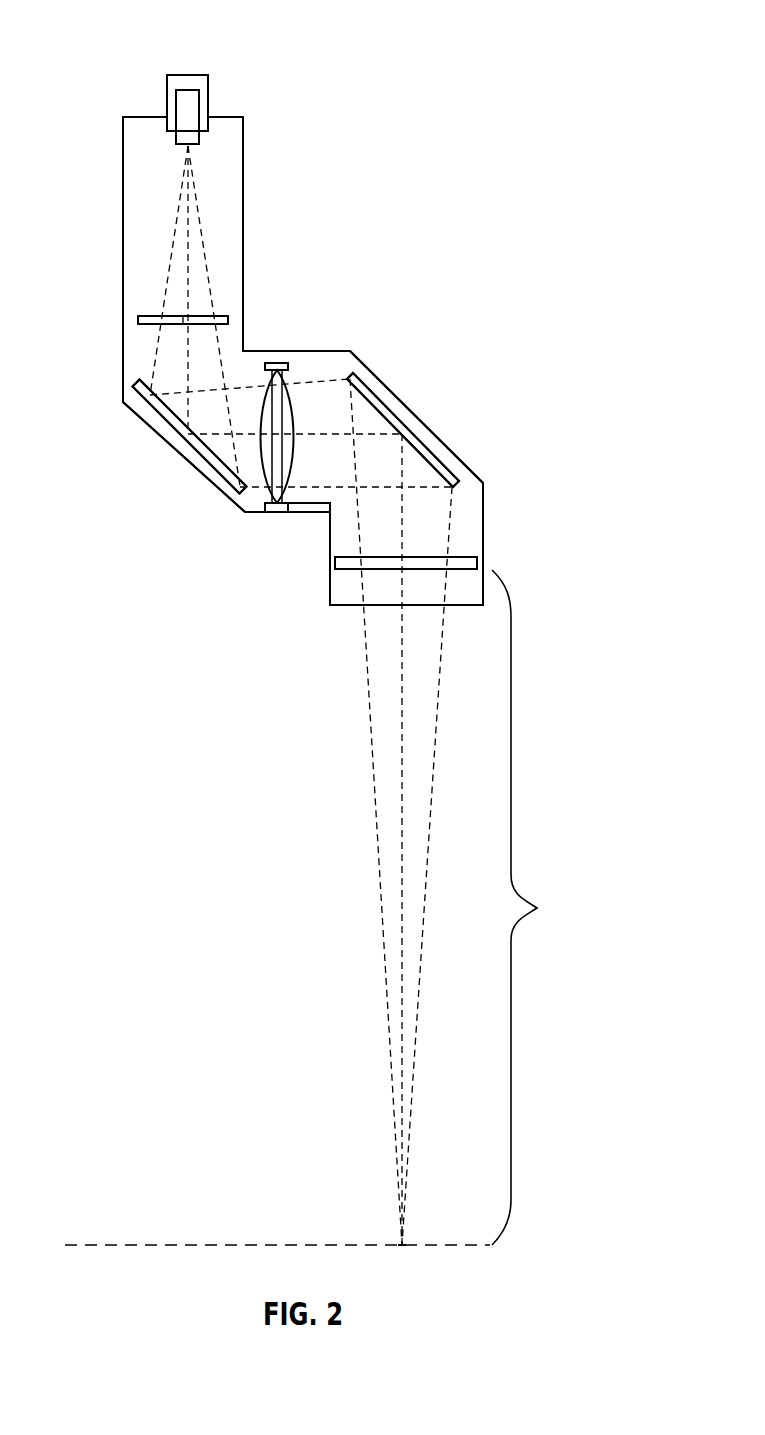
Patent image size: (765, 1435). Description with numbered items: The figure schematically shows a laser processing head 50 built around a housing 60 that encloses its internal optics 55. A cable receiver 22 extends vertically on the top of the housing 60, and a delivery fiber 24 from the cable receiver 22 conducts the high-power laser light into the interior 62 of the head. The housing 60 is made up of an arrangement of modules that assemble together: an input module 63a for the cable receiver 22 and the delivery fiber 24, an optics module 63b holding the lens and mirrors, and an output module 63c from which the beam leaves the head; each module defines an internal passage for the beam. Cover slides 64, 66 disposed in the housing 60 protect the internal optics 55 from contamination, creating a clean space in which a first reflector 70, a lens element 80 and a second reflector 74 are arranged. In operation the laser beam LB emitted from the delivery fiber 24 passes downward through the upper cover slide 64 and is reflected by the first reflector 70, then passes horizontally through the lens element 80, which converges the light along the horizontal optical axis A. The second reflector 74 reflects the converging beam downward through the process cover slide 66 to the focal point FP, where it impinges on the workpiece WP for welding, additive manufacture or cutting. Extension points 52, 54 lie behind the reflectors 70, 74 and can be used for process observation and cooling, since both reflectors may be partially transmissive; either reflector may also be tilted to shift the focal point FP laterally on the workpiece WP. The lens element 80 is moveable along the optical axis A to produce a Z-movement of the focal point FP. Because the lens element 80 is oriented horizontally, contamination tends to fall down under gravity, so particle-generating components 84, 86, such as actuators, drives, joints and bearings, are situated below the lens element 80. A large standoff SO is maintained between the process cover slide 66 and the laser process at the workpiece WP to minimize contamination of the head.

The cable receiver 22 is at (188, 75).
The delivery fiber 24 is at (199, 108).
The laser processing head 50 is at (405, 243).
The extension point 52 is at (157, 433).
The extension point 54 is at (407, 377).
The internal optics 55 is at (156, 381).
The housing 60 is at (123, 167).
The interior 62 is at (243, 181).
The input module 63a is at (123, 218).
The optics module 63b is at (250, 517).
The output module 63c is at (484, 500).
The upper cover slide 64 is at (138, 321).
The process cover slide 66 is at (478, 561).
The first reflector 70 is at (200, 460).
The second reflector 74 is at (415, 437).
The lens element 80 is at (279, 362).
The component 84 is at (310, 515).
The actuator or drive 86 is at (309, 543).
The optical axis A is at (402, 673).
The laser beam LB is at (372, 762).
The standoff SO is at (534, 907).
The workpiece WP is at (162, 1245).
The focal point FP is at (402, 1243).